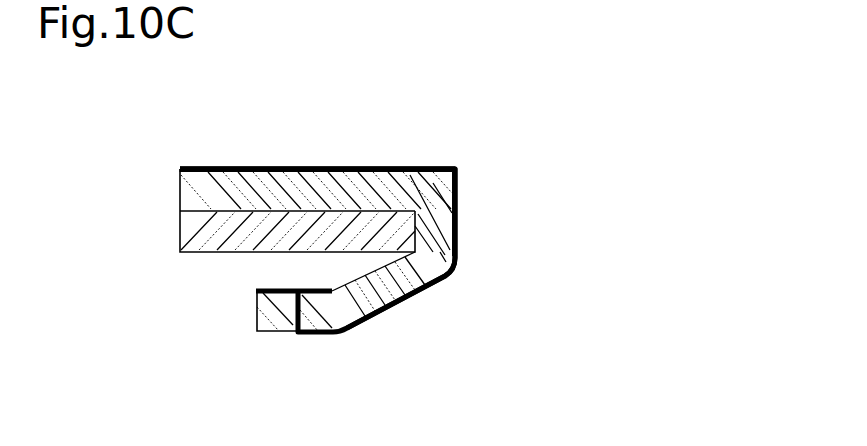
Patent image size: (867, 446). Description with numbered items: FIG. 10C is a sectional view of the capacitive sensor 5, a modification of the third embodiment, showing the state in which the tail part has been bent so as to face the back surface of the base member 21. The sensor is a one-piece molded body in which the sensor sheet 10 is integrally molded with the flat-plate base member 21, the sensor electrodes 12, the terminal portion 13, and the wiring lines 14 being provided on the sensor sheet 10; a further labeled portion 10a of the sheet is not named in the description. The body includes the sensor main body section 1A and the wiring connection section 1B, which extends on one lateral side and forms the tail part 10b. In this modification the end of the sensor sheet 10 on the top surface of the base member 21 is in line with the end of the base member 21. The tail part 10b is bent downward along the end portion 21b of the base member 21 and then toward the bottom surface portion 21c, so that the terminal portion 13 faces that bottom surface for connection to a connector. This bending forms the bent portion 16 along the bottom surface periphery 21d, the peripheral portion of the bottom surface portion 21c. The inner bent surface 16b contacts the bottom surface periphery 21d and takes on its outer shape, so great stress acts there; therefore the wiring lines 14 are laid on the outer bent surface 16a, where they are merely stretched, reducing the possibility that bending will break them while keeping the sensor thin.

The sensor main body section 1A is at (191, 168).
The wiring connection section 1B is at (300, 337).
The capacitive sensor 5 is at (518, 180).
The sensor sheet 10 is at (231, 190).
The first surface of base layer 10a is at (295, 190).
The tail part 10b is at (432, 231).
The sensor electrodes 12 is at (347, 167).
The terminal portion 13 is at (277, 288).
The wiring lines 14 is at (372, 308).
The bent portion 16 is at (375, 250).
The outer bent surface 16a is at (455, 262).
The inner bent surface 16b is at (394, 180).
The base member 21 is at (200, 252).
The end portion of the base member 21b is at (447, 185).
The bottom surface portion 21c is at (240, 252).
The bottom surface periphery 21d is at (445, 283).